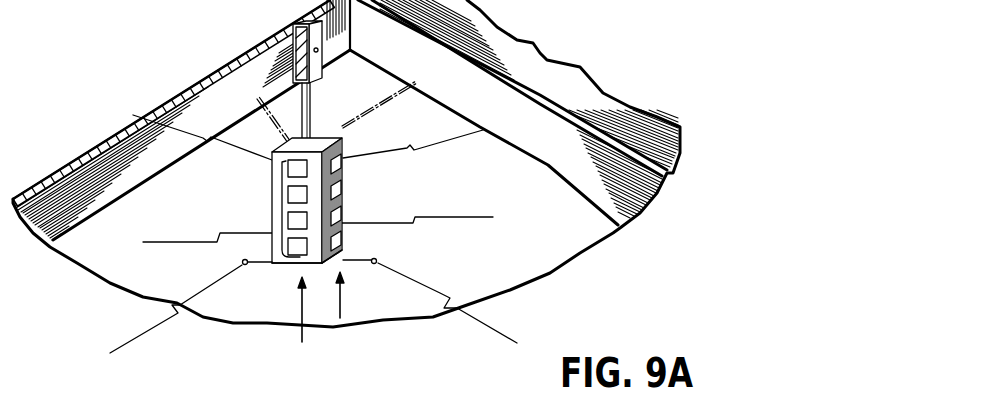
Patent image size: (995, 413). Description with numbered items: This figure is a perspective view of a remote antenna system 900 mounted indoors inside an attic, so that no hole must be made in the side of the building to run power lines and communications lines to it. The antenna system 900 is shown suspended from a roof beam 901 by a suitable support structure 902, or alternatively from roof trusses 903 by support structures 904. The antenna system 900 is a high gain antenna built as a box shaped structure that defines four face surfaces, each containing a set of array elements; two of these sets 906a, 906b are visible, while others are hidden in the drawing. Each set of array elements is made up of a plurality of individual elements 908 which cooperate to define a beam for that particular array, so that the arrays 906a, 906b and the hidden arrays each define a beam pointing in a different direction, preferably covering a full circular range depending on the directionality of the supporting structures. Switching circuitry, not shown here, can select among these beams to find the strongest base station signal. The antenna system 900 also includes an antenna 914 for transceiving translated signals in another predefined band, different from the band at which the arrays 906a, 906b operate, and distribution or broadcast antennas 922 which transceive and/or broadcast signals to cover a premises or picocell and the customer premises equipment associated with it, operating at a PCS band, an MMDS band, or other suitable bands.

The antenna system 900 is at (333, 181).
The roof beam 901 is at (268, 43).
The support structure 902 is at (310, 103).
The roof trusses 903 is at (198, 112).
The support structures 904 is at (268, 124).
The set of array elements 906a is at (286, 209).
The set of array elements 906b is at (368, 156).
The individual elements 908 is at (337, 241).
The antenna 914 is at (282, 271).
The distribution or broadcast antennas 922 is at (242, 262).